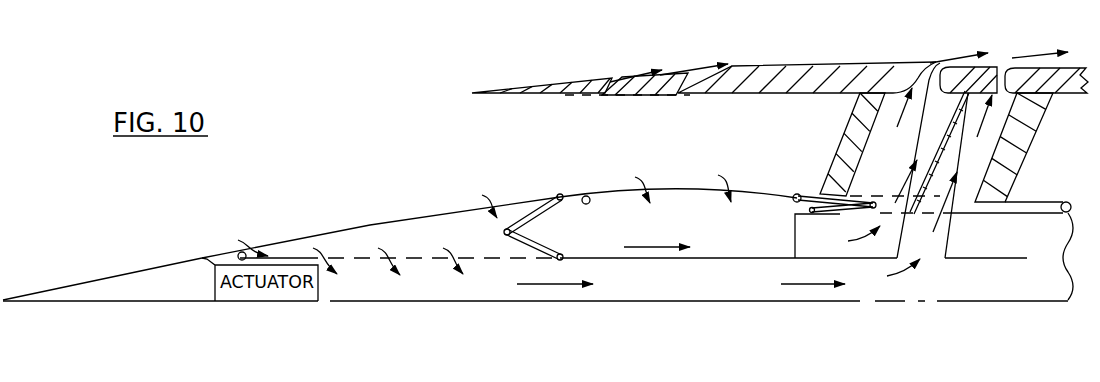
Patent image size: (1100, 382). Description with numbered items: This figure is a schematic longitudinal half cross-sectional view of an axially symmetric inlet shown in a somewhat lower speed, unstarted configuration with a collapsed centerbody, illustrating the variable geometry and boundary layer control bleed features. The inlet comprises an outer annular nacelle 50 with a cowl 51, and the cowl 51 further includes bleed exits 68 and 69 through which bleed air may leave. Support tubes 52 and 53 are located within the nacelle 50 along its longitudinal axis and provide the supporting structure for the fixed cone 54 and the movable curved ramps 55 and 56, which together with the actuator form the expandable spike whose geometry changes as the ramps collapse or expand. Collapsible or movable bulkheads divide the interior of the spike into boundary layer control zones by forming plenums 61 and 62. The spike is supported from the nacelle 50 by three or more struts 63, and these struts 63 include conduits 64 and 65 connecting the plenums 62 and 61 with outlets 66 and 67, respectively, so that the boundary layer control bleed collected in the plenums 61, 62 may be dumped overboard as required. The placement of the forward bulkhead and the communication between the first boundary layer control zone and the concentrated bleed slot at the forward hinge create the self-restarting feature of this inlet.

The outer annular nacelle 50 is at (791, 66).
The cowl 51 is at (503, 88).
The support tube 52 is at (764, 229).
The support tube 53 is at (985, 216).
The fixed cone 54 is at (191, 238).
The movable curved ramp 55 is at (366, 227).
The movable curved ramp 56 is at (676, 188).
The plenum 61 is at (464, 244).
The plenum 62 is at (652, 234).
The strut 63 is at (1043, 136).
The conduit 64 is at (866, 150).
The conduit 65 is at (968, 153).
The outlet 66 is at (942, 68).
The outlet 67 is at (1028, 67).
The bleed exit 68 is at (578, 94).
The bleed exit 69 is at (662, 94).